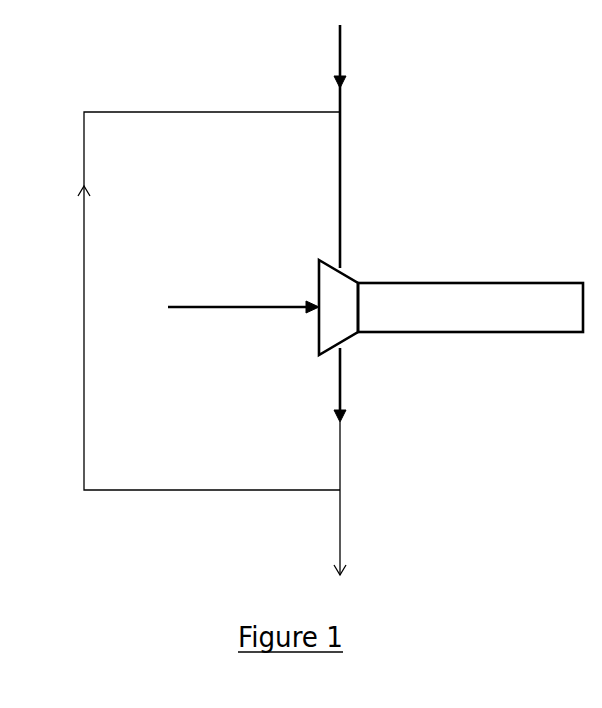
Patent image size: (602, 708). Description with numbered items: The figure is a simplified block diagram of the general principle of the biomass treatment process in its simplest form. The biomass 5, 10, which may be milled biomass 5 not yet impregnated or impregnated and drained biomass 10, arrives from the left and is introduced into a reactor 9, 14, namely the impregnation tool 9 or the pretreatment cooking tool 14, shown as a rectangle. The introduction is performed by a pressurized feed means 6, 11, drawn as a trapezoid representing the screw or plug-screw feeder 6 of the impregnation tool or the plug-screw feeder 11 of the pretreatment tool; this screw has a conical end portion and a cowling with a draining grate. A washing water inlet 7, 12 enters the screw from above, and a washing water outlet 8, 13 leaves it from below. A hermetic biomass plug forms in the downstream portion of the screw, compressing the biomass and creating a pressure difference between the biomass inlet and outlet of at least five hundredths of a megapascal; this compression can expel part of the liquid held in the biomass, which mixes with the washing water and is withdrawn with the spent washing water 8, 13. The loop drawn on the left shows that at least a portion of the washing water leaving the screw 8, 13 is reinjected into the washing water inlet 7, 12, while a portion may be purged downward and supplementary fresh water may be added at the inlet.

The water for washing the plug-screw feeder of the impregnation tool 7 is at (376, 146).
The water for washing the plug-screw feeder of the pretreatment tool 12 is at (376, 146).
The impregnated and drained biomass 10 is at (243, 286).
The milled biomass 5 is at (243, 286).
The screw or plug-screw feeder of the pretreatment tool 11 is at (288, 328).
The screw or plug-screw feeder of the impregnation tool 6 is at (325, 332).
The impregnation tool (reactor) 9 is at (470, 307).
The pretreatment cooking tool (explosion reactor) 14 is at (470, 307).
The washing liquid outlet of the plug-screw feeder of the impregnation tool 8 is at (367, 385).
The press liquor of the plug-screw feeder of the pretreatment tool 13 is at (367, 385).